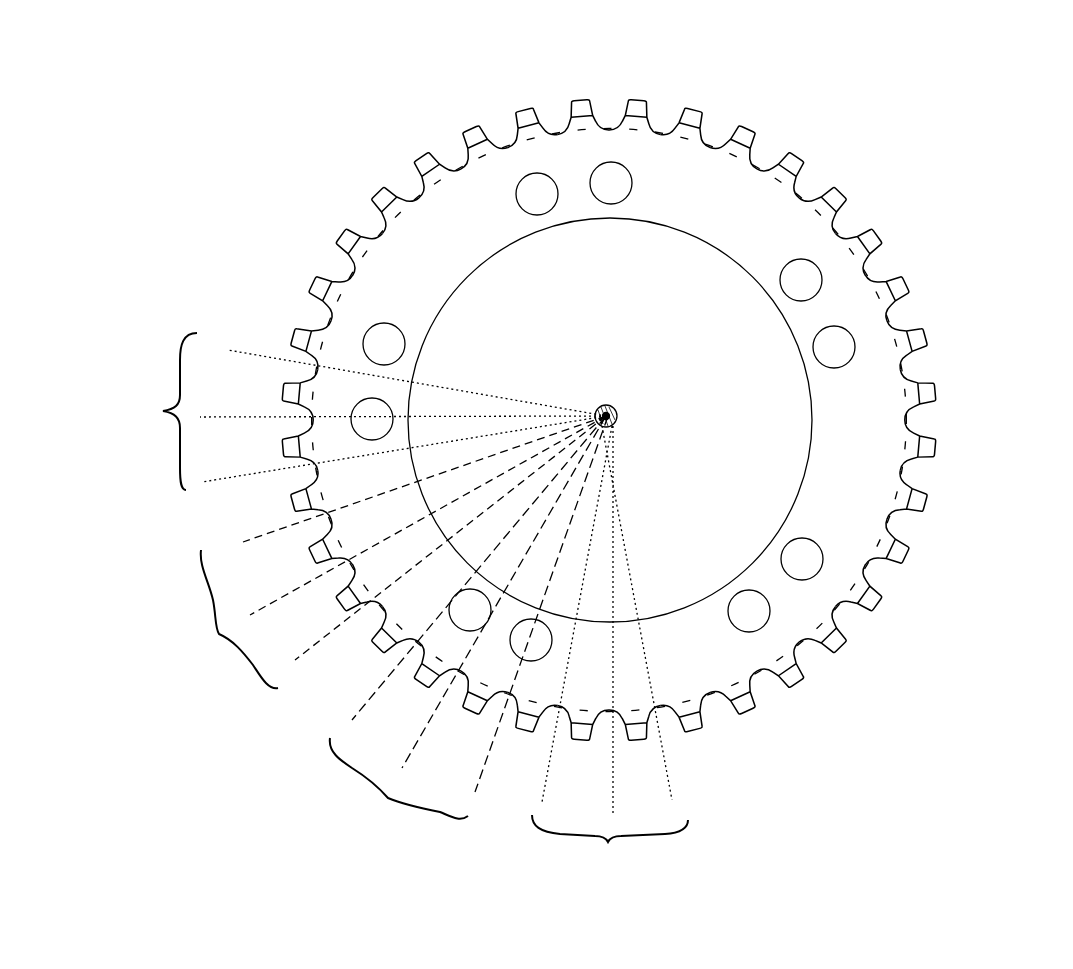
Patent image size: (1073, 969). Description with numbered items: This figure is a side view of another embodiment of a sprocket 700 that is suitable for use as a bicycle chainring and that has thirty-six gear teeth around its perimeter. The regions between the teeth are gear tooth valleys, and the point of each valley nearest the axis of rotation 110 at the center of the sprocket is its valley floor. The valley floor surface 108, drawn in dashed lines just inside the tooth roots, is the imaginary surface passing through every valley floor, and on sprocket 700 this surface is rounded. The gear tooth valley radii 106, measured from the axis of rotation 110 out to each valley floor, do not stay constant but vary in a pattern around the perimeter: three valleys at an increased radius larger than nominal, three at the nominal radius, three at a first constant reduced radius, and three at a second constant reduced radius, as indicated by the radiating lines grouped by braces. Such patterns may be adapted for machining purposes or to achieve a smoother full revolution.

The sprocket 700 is at (340, 136).
The gear tooth valley radius 106 is at (480, 390).
The valley floor surface 108 is at (901, 352).
The axis of rotation 110 is at (613, 405).